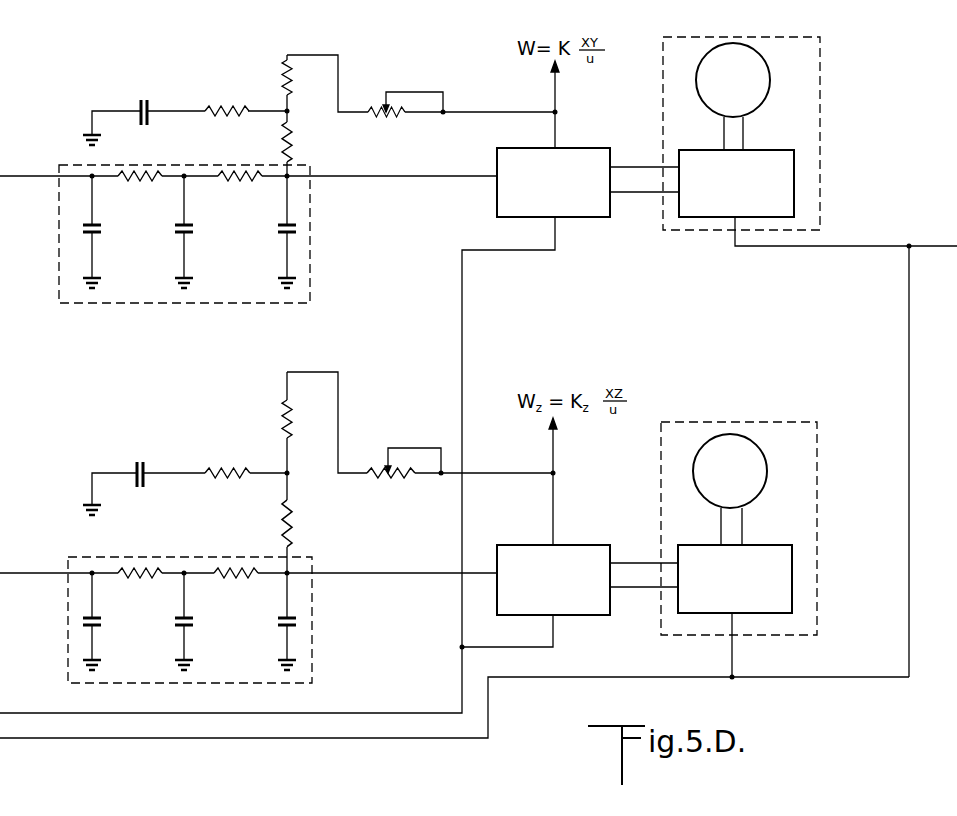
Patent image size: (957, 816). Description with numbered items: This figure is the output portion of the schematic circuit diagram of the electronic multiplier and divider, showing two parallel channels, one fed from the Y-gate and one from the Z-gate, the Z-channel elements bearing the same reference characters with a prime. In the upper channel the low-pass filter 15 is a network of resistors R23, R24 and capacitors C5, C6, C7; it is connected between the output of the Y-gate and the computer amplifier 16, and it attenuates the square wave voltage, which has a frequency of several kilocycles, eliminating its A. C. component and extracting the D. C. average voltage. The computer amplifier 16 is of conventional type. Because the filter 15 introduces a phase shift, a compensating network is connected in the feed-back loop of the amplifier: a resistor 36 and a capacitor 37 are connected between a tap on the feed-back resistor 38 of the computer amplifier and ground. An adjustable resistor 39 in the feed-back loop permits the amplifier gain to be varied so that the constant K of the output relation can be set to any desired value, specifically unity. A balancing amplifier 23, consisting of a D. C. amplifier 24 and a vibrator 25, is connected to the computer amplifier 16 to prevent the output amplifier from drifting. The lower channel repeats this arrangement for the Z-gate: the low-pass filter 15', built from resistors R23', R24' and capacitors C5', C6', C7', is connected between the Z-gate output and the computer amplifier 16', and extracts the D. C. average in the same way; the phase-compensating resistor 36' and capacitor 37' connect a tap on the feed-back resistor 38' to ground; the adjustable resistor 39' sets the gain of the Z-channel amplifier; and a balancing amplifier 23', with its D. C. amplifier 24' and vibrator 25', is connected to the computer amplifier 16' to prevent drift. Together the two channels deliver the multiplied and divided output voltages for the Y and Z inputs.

The filter 15 is at (217, 234).
The computer amplifier 16 is at (554, 206).
The balancing amplifier 23 is at (776, 133).
The D. C. amplifier 24 is at (737, 170).
The vibrator 25 is at (753, 80).
The resistor 36 is at (227, 90).
The capacitor 37 is at (148, 95).
The feed-back resistor 38 is at (306, 115).
The adjustable resistor 39 is at (394, 126).
The resistor R23 is at (139, 191).
The resistor R24 is at (240, 191).
The capacitor C5 is at (105, 232).
The capacitor C6 is at (198, 232).
The capacitor C7 is at (274, 232).
The low-pass filter 15' is at (220, 620).
The computer amplifier 16' is at (553, 605).
The balancing amplifier 23' is at (773, 528).
The D. C. amplifier 24' is at (735, 562).
The vibrator 25' is at (747, 471).
The resistor 36' is at (229, 490).
The capacitor 37' is at (150, 487).
The feed-back resistor 38' is at (306, 472).
The adjustable resistor 39' is at (383, 495).
The resistor R23' is at (139, 588).
The resistor R24' is at (235, 588).
The capacitor C5' is at (107, 621).
The capacitor C6' is at (200, 621).
The capacitor C7' is at (275, 621).